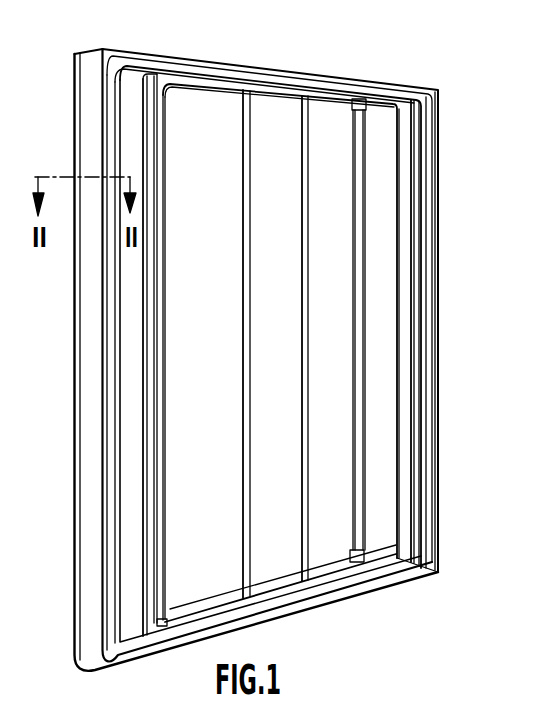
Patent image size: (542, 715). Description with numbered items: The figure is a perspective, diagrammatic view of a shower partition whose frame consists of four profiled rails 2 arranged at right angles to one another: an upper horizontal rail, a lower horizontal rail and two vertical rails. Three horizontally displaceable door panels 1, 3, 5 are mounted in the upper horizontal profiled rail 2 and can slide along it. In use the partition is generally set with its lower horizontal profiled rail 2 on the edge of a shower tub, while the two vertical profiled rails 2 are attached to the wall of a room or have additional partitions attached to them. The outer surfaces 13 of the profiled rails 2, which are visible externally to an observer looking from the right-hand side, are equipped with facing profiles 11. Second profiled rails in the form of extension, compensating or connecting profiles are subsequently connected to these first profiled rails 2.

The door panel 1 is at (212, 260).
The profiled rail 2 is at (283, 72).
The door panel 3 is at (282, 261).
The door panel 5 is at (336, 262).
The facing profile 11 is at (108, 294).
The outer surface 13 is at (433, 302).